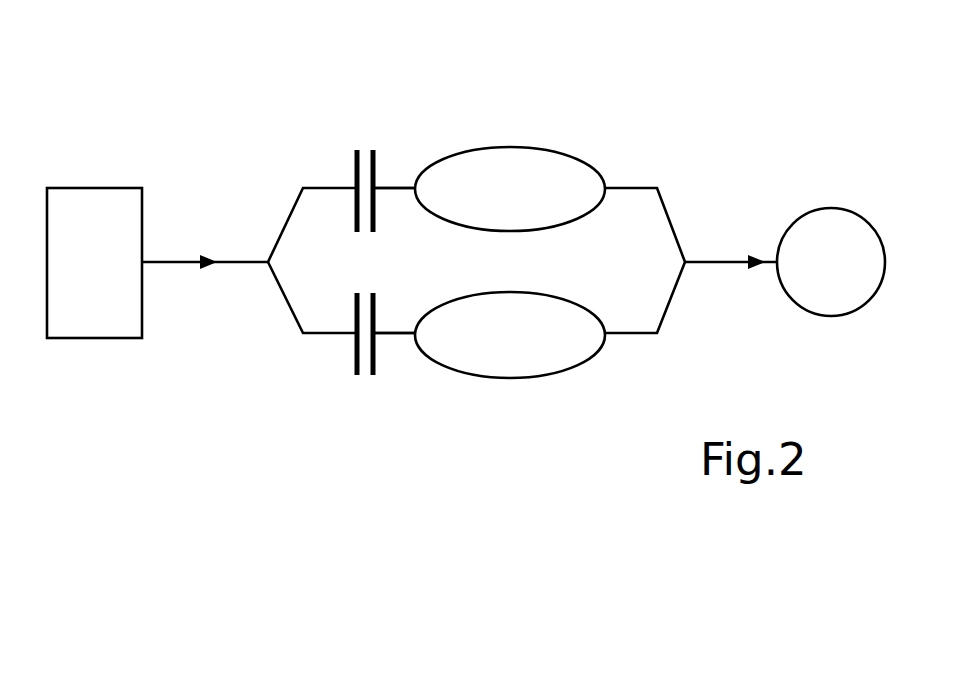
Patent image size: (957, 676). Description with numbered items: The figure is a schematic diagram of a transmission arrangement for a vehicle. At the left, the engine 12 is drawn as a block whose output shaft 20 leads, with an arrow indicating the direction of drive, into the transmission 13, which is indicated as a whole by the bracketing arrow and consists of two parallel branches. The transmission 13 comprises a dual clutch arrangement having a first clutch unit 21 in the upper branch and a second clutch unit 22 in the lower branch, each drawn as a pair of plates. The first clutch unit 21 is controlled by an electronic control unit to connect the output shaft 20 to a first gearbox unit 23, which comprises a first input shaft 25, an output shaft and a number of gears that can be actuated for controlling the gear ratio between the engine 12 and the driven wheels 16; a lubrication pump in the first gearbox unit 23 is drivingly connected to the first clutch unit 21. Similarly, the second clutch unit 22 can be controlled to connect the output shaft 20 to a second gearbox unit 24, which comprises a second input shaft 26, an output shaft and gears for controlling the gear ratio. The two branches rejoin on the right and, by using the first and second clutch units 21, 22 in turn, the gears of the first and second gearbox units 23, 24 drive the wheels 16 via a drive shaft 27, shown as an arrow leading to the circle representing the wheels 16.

The engine 12 is at (95, 188).
The output shaft 20 is at (165, 262).
The transmission 13 is at (662, 158).
The first clutch unit 21 is at (353, 168).
The second clutch unit 22 is at (355, 357).
The first input shaft 25 is at (393, 187).
The second input shaft 26 is at (393, 337).
The first gearbox unit 23 is at (535, 147).
The second gearbox unit 24 is at (522, 373).
The drive shaft 27 is at (720, 262).
The driven wheels 16 is at (828, 208).